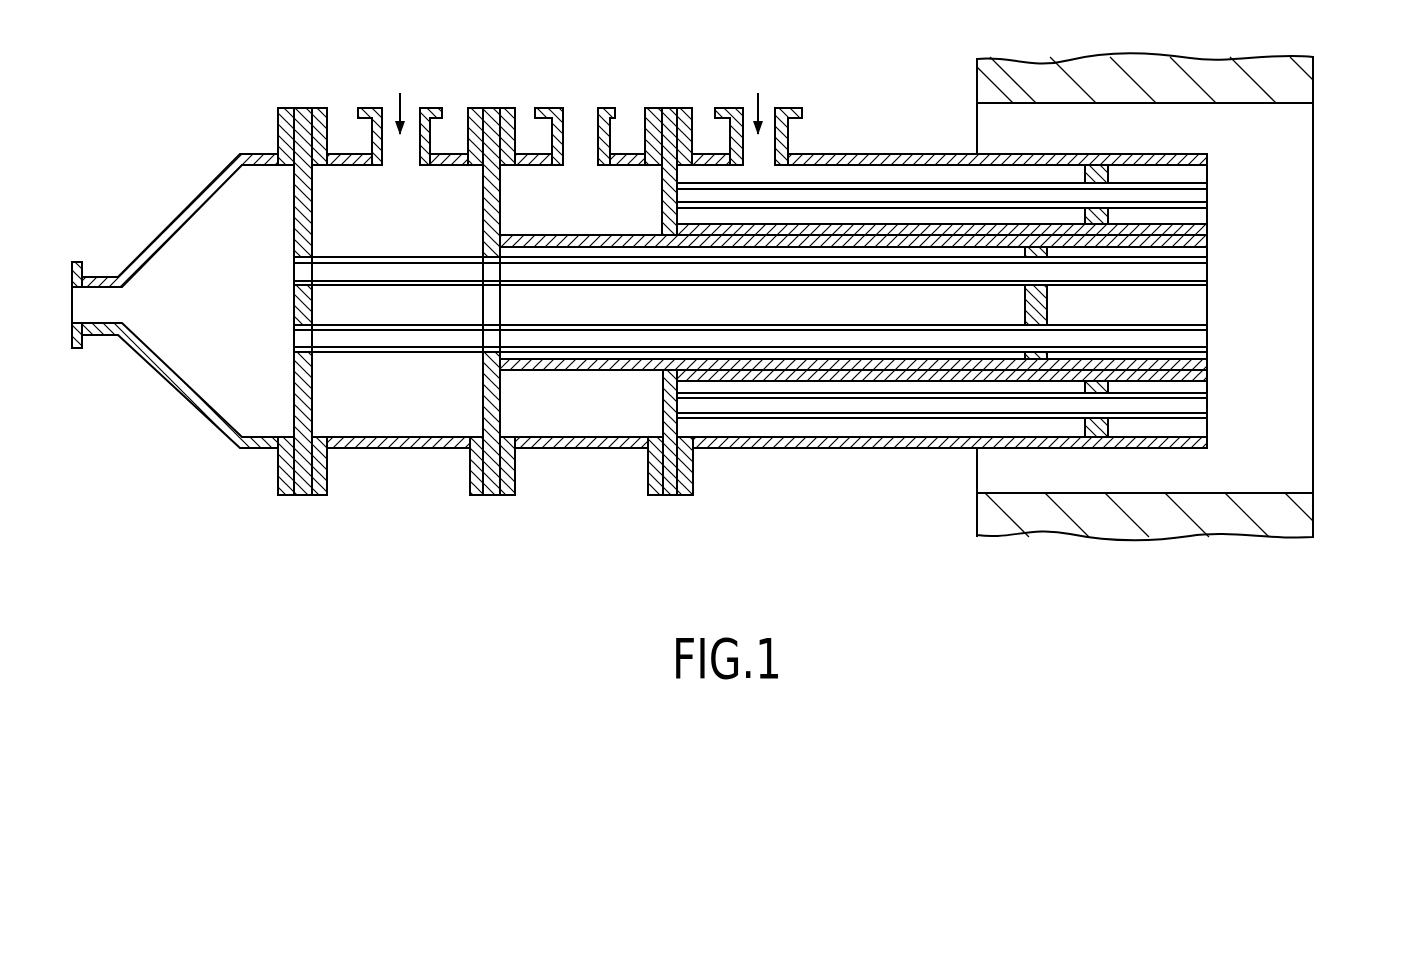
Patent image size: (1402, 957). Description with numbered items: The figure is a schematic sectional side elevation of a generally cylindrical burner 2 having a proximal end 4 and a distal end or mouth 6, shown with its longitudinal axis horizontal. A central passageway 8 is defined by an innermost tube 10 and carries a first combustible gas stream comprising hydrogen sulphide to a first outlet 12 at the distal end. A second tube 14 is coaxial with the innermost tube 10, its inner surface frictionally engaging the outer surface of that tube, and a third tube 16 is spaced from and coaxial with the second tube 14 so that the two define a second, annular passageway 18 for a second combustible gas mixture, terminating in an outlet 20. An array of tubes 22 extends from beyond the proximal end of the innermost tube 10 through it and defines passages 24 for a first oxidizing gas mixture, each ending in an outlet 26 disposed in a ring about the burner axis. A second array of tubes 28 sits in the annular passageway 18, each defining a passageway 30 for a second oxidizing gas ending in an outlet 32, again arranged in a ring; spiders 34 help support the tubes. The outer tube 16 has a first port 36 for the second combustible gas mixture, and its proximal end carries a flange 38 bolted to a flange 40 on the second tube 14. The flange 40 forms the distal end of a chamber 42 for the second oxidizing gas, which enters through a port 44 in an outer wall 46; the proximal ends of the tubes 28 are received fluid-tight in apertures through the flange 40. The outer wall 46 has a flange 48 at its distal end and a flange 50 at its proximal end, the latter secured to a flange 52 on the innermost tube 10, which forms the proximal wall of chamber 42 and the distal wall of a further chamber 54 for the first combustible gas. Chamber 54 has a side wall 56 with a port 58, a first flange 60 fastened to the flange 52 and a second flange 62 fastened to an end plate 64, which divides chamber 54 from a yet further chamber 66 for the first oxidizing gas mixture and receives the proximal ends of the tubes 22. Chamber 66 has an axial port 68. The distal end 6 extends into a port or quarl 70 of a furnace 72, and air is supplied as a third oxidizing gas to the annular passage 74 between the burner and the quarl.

The burner 2 is at (789, 520).
The proximal end 4 is at (146, 428).
The mouth 6 is at (1296, 280).
The central passageway 8 is at (806, 318).
The innermost tube 10 is at (613, 378).
The first outlet 12 is at (1202, 305).
The second tube 14 is at (942, 222).
The third tube 16 is at (840, 450).
The second annular passageway 18 is at (900, 170).
The outlet 20 is at (1200, 172).
The array of tubes 22 is at (370, 270).
The passages 24 is at (543, 270).
The outlets 26 is at (1202, 265).
The second array of tubes 28 is at (706, 196).
The passageway 30 is at (843, 197).
The outlet 32 is at (1202, 195).
The spider 34 is at (1037, 230).
The first port 36 is at (752, 107).
The flange 38 is at (672, 107).
The flange 40 is at (665, 497).
The chamber 42 is at (568, 216).
The port 44 is at (566, 106).
The outer wall 46 is at (560, 450).
The flange 48 is at (636, 478).
The flange 50 is at (508, 106).
The flange 52 is at (492, 497).
The further chamber 54 is at (386, 226).
The side wall 56 is at (375, 450).
The port 58 is at (389, 106).
The first flange 60 is at (470, 470).
The second flange 62 is at (312, 497).
The end plate 64 is at (287, 107).
The yet further chamber 66 is at (199, 321).
The port 68 is at (98, 300).
The port or quarl 70 is at (1210, 520).
The furnace 72 is at (1356, 449).
The annular passage 74 is at (1073, 476).